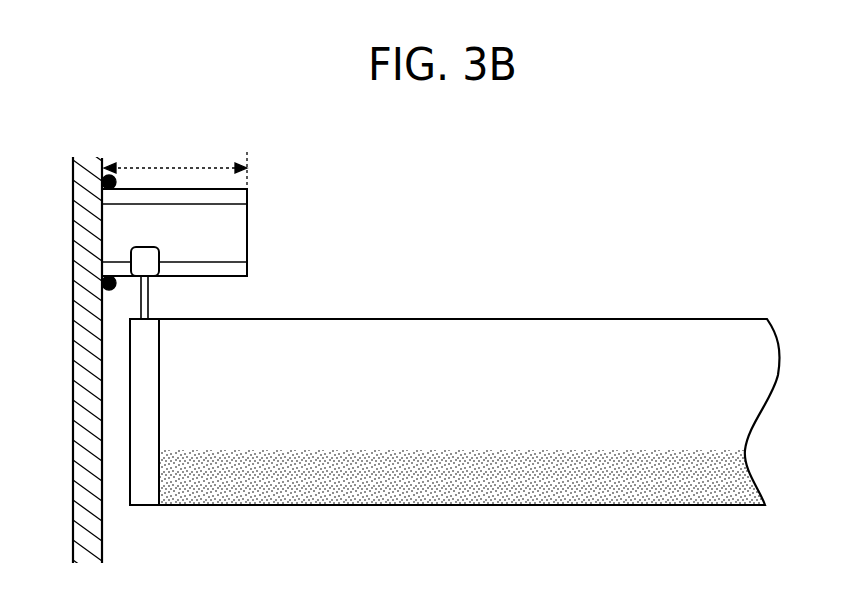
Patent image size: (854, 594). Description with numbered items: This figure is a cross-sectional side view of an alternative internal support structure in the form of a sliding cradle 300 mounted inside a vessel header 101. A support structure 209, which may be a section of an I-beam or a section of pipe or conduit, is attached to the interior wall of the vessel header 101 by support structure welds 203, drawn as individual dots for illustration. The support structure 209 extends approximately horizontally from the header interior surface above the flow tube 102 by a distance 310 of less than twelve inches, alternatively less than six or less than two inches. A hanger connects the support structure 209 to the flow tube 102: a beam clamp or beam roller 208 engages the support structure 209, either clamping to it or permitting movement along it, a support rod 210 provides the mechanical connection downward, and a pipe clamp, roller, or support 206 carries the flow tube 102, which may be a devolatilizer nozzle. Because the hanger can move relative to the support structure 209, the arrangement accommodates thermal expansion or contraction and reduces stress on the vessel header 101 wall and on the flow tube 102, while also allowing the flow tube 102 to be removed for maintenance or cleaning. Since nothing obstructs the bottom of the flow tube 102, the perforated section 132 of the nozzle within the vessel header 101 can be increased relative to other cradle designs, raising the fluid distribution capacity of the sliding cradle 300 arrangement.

The vessel header 101 is at (103, 160).
The flow tube 102 is at (522, 318).
The perforated section 132 is at (327, 488).
The support structure welds 203 is at (101, 181).
The pipe clamp, roller, or support 206 is at (143, 505).
The beam clamp or beam roller 208 is at (160, 255).
The support structure 209 is at (233, 189).
The support rod 210 is at (150, 305).
The sliding cradle 300 is at (356, 173).
The distance 310 is at (183, 167).